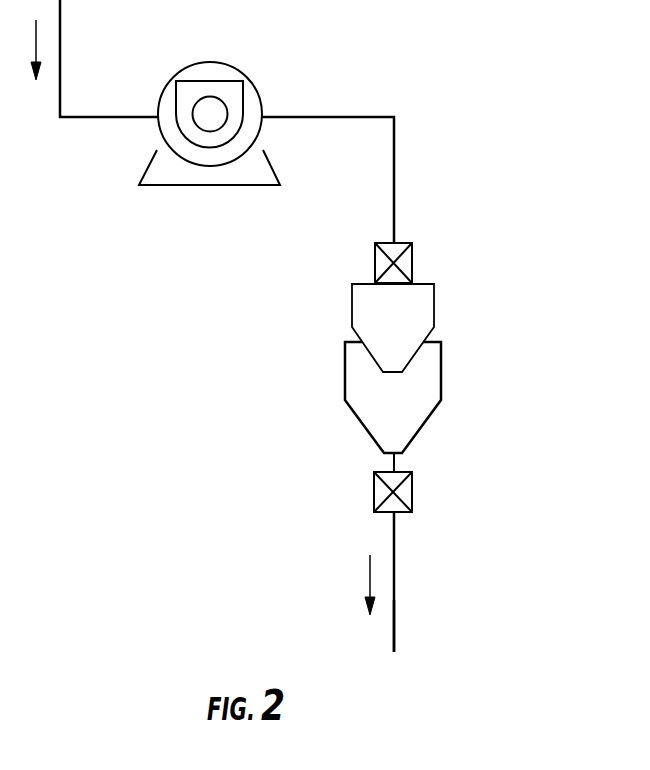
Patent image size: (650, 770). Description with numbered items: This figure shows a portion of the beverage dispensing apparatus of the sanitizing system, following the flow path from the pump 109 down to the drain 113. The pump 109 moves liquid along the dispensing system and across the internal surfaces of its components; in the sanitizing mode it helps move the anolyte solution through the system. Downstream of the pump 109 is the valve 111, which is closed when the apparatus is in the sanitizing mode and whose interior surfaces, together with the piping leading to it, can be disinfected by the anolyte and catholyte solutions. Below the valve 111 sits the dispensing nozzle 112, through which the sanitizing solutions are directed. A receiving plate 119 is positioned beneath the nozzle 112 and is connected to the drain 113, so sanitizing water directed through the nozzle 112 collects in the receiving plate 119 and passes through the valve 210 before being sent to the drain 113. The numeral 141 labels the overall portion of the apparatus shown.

The pump 109 is at (178, 67).
The valve 111 is at (375, 252).
The dispensing nozzle 112 is at (365, 325).
The receiving plate 119 is at (428, 400).
The valve 210 is at (412, 480).
The drain 113 is at (396, 648).
The system 141 is at (73, 550).